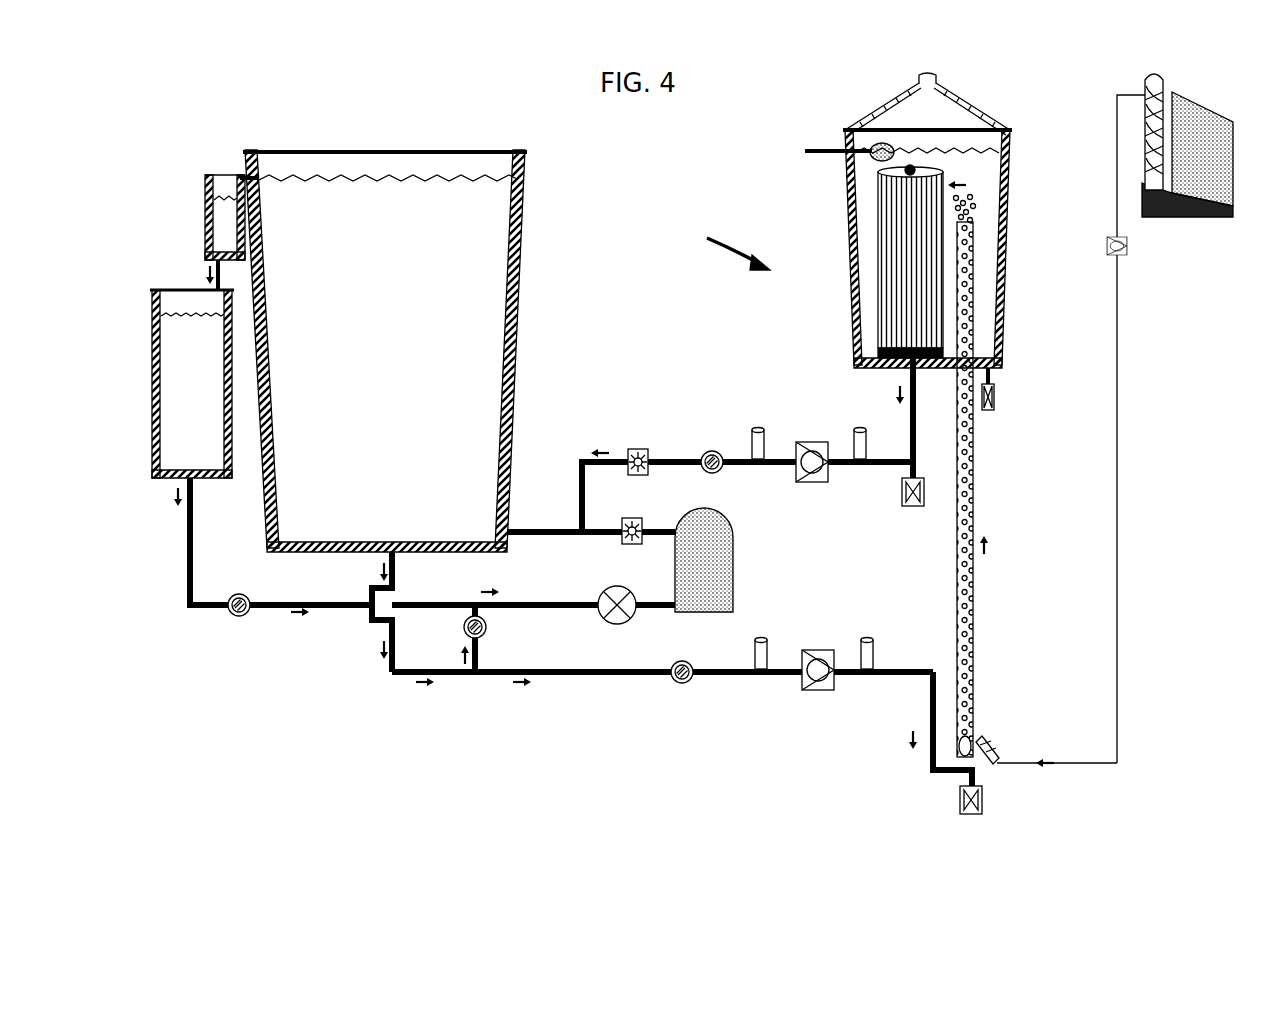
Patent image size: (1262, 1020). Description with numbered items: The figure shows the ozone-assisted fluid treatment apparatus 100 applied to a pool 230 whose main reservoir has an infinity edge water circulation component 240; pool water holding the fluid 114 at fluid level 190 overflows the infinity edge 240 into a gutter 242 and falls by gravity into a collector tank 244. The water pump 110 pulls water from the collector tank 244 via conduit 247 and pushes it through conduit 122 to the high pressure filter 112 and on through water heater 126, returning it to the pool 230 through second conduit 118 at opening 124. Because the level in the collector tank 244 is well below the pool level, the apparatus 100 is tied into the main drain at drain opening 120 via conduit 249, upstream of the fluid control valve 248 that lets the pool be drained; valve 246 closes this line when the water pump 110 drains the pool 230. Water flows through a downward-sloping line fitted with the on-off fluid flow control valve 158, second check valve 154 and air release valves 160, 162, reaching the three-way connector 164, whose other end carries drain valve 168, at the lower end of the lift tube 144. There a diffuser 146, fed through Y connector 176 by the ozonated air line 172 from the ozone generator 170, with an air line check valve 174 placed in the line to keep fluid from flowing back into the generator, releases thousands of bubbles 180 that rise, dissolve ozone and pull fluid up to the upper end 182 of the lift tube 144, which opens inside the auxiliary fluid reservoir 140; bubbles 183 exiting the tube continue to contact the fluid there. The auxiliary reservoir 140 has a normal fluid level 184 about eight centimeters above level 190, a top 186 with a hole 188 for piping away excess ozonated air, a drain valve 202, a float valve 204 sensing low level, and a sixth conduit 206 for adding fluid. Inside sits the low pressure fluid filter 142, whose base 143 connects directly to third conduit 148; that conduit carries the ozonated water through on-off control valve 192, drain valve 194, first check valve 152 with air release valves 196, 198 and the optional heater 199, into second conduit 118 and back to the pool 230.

The ozone-assisted fluid treatment apparatus 100 is at (726, 239).
The high pressure water pump 110 is at (625, 588).
The high pressure filter 112 is at (728, 536).
The fluid 114 is at (385, 327).
The second conduit 118 is at (592, 530).
The drain opening 120 is at (393, 548).
The conduit 122 is at (648, 612).
The opening 124 is at (500, 533).
The water heater 126 is at (636, 519).
The auxiliary fluid reservoir 140 is at (1010, 206).
The low pressure fluid filter 142 is at (878, 224).
The base of filter 143 is at (917, 376).
The lift tube 144 is at (975, 621).
The diffuser 146 is at (978, 734).
The third conduit 148 is at (585, 500).
The first check valve 152 is at (810, 442).
The second check valve 154 is at (815, 652).
The on-off fluid flow control valve 158 is at (684, 660).
The air release valve 160 is at (761, 641).
The air release valve 162 is at (868, 640).
The 3-way connector 164 is at (975, 772).
The drain valve 168 is at (983, 805).
The ozone generator 170 is at (1198, 101).
The ozonated air line 172 is at (1111, 140).
The compressor 174 is at (1107, 248).
The Y connector 176 is at (1000, 749).
The bubbles 180 is at (975, 676).
The upper end of lift tube 182 is at (1003, 224).
The bubbles 183 is at (962, 196).
The fluid level 184 is at (955, 151).
The top 186 is at (975, 111).
The hole 188 is at (936, 78).
The fluid level 190 is at (395, 183).
The on-off fluid flow control valve 192 is at (708, 450).
The drain valve 194 is at (925, 510).
The air release valve 196 is at (856, 432).
The air release valve 198 is at (754, 432).
The heater 199 is at (634, 448).
The drain valve 202 is at (993, 410).
The float valve 204 is at (877, 161).
The sixth conduit 206 is at (805, 150).
The pool 230 is at (273, 151).
The infinity edge water circulation component 240 is at (259, 183).
The gutter 242 is at (218, 176).
The collector tank 244 is at (172, 290).
The valve 246 is at (246, 597).
The conduit 247 is at (413, 603).
The fluid control valve 248 is at (488, 628).
The conduit 249 is at (396, 655).